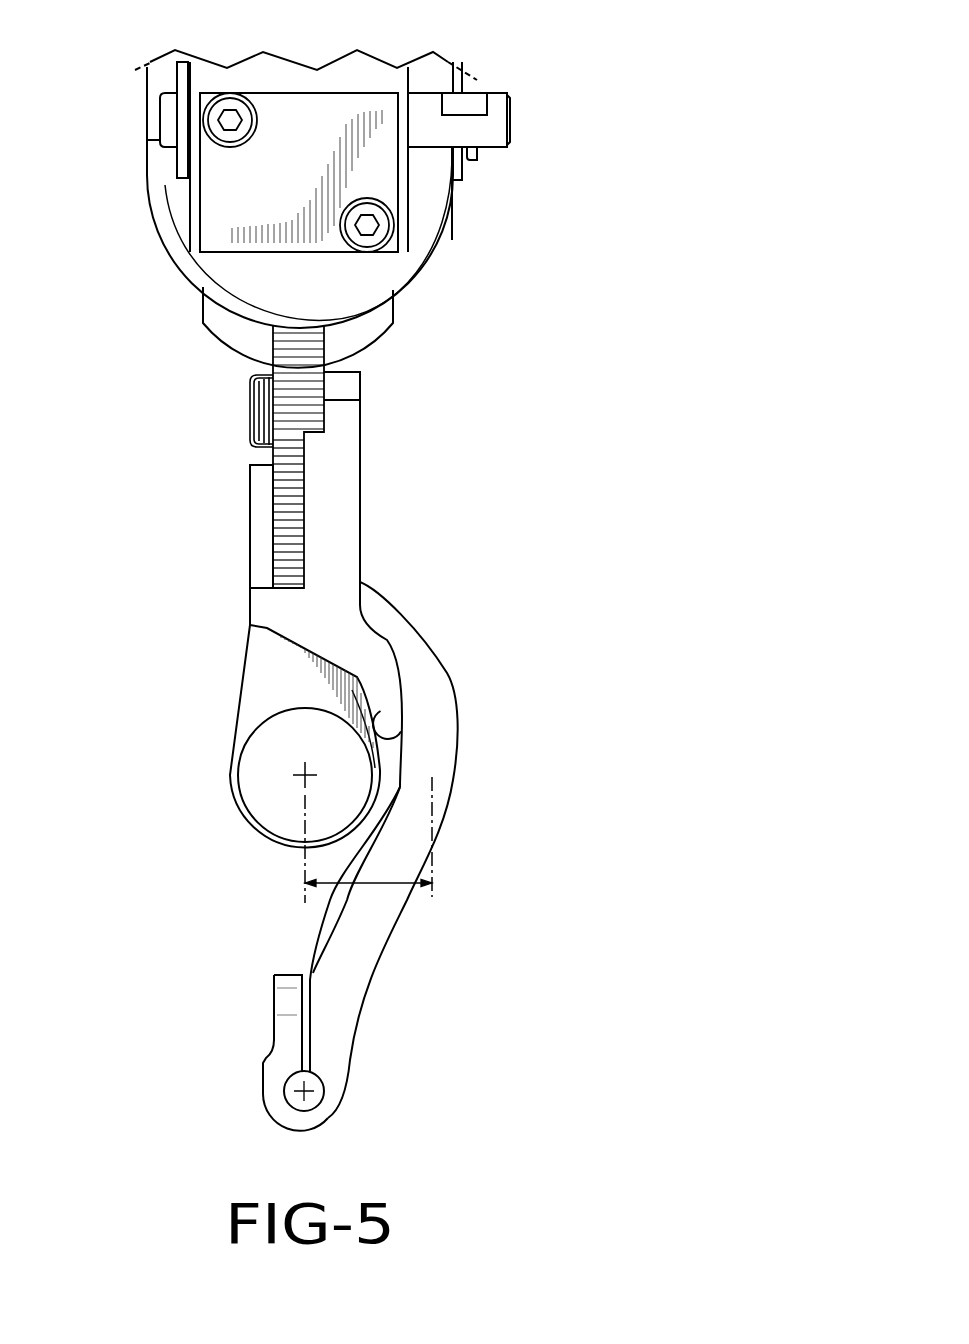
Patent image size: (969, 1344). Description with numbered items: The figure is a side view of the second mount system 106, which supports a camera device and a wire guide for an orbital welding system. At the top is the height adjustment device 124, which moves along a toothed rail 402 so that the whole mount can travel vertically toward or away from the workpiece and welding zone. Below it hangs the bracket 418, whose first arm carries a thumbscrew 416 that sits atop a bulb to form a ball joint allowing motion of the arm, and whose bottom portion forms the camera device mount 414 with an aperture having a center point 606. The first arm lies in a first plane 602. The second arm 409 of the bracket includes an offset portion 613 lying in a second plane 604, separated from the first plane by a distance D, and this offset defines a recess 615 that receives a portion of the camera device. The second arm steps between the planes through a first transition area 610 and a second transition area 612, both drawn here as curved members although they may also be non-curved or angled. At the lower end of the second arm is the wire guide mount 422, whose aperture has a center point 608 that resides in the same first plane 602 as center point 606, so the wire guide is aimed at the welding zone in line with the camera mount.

The second mount system 106 is at (622, 112).
The height adjustment device 124 is at (225, 210).
The rail 402 is at (283, 362).
The thumbscrew 416 is at (250, 424).
The bracket 418 is at (350, 525).
The first transition area 610 is at (437, 640).
The recess 615 is at (385, 712).
The camera device mount 414 is at (267, 693).
The second plane 604 is at (435, 823).
The center point 606 is at (302, 778).
The offset portion 613 is at (442, 845).
The first plane 602 is at (300, 875).
The distance D is at (367, 885).
The second transition area 612 is at (382, 955).
The wire guide mount 422 is at (285, 1089).
The center point 608 is at (307, 1092).
The second arm 409 is at (285, 1132).